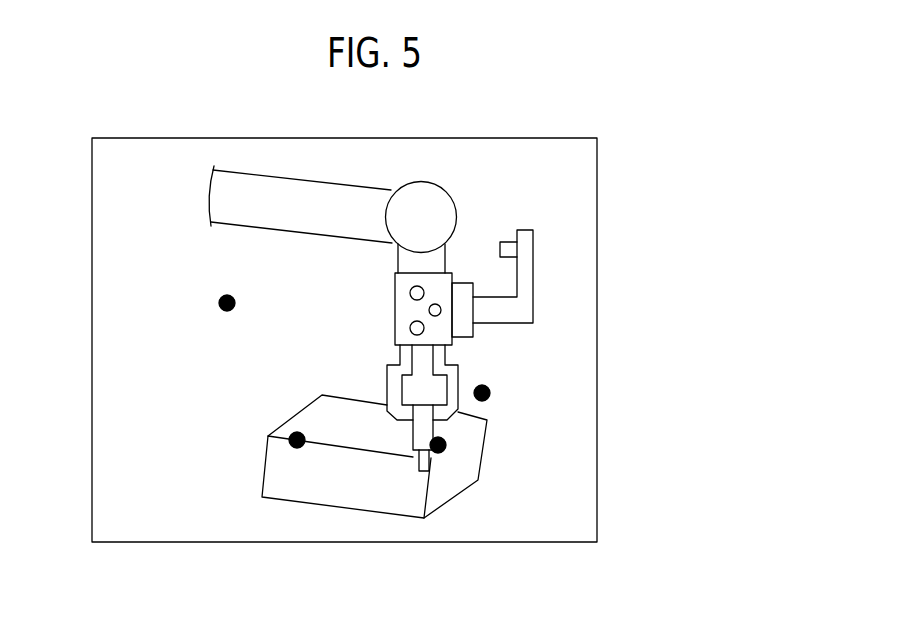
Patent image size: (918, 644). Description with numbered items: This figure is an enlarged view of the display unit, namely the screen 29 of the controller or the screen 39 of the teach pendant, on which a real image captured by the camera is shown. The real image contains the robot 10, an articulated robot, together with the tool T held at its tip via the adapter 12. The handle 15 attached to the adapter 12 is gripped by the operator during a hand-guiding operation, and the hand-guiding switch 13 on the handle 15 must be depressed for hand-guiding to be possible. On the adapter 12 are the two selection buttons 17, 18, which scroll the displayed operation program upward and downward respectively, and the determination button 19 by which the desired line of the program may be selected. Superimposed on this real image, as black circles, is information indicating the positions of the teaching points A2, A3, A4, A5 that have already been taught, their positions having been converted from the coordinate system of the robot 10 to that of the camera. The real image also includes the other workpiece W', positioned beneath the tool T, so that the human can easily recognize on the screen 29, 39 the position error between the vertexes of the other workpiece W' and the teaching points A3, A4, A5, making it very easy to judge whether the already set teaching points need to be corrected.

The robot 10 is at (316, 173).
The adapter 12 is at (393, 313).
The hand-guiding switch 13 is at (501, 242).
The handle 15 is at (526, 264).
The selection button 17 is at (410, 293).
The selection button 18 is at (411, 332).
The determination button 19 is at (431, 305).
The screen 29 is at (414, 340).
The screen 39 is at (597, 191).
The tool T is at (483, 424).
The other workpiece W' is at (374, 491).
The teaching point A2 is at (221, 310).
The teaching point A3 is at (289, 446).
The teaching point A4 is at (485, 429).
The teaching point A5 is at (492, 391).